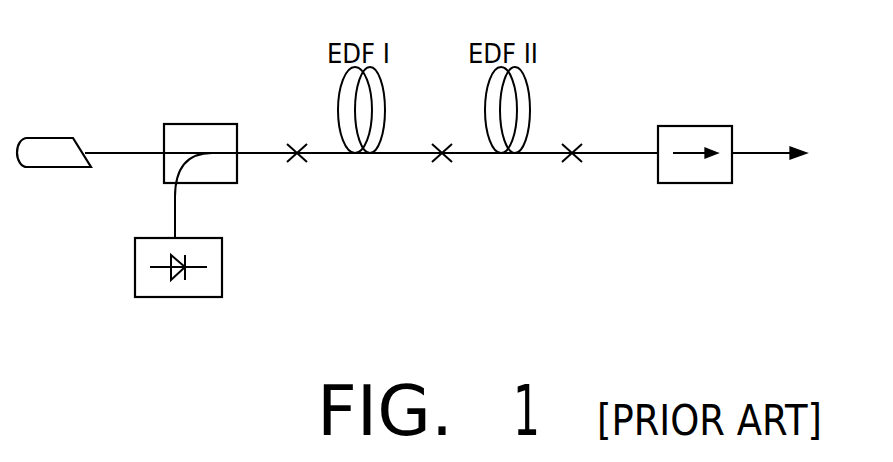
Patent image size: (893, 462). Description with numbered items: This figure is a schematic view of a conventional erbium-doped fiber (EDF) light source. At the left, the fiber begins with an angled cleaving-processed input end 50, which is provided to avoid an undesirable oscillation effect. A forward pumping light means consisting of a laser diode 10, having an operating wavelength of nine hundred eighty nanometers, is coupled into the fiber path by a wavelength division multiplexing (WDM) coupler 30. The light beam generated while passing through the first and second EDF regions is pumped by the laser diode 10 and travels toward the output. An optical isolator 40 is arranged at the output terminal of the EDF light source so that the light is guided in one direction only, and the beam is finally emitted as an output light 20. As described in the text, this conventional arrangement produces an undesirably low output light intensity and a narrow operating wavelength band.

The laser diode 10 is at (222, 267).
The output light 20 is at (797, 155).
The wavelength division multiplexing (WDM) coupler 30 is at (203, 124).
The optical isolator 40 is at (698, 126).
The angled cleaving-processed input end 50 is at (53, 138).